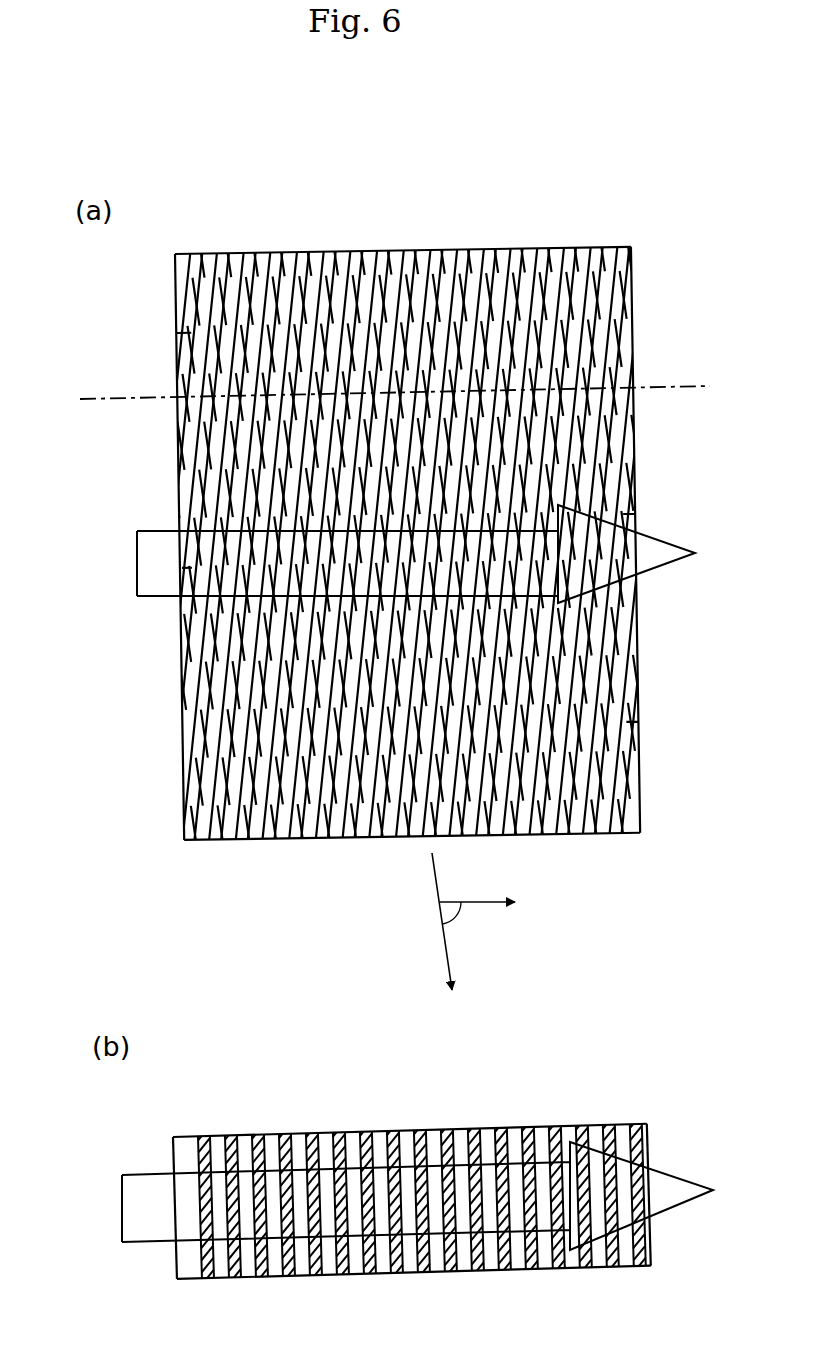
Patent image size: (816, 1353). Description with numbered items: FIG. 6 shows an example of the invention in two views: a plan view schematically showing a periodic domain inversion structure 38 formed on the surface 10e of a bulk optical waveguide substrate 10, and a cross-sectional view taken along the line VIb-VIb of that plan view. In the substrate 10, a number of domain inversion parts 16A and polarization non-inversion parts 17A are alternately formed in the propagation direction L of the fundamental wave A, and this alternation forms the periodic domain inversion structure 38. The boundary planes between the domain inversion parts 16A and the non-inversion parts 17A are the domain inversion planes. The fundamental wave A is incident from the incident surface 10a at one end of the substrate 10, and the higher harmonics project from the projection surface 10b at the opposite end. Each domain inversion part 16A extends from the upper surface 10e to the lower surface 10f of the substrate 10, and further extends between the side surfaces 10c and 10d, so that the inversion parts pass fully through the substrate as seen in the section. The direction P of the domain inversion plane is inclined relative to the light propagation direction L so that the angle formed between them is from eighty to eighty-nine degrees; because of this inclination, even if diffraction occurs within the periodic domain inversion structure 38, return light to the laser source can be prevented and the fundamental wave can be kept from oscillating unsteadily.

The bulk optical waveguide substrate 10 is at (416, 748).
The incident surface 10a is at (173, 325).
The projection surface 10b is at (636, 312).
The side surface 10c is at (365, 252).
The side surface 10d is at (580, 838).
The upper surface 10e is at (455, 250).
The lower surface 10f is at (380, 1277).
The domain inversion part 16A is at (242, 842).
The polarization non-inversion part 17A is at (318, 842).
The periodic domain inversion structure 38 is at (556, 242).
The fundamental wave A is at (662, 545).
The propagation direction L is at (483, 898).
The direction of the domain inversion plane P is at (450, 958).
The line VIb- VIb is at (392, 376).